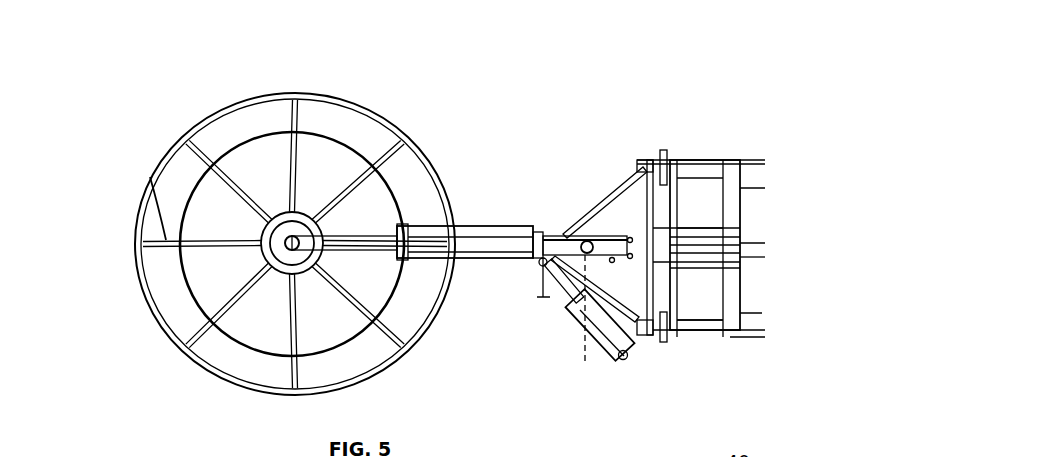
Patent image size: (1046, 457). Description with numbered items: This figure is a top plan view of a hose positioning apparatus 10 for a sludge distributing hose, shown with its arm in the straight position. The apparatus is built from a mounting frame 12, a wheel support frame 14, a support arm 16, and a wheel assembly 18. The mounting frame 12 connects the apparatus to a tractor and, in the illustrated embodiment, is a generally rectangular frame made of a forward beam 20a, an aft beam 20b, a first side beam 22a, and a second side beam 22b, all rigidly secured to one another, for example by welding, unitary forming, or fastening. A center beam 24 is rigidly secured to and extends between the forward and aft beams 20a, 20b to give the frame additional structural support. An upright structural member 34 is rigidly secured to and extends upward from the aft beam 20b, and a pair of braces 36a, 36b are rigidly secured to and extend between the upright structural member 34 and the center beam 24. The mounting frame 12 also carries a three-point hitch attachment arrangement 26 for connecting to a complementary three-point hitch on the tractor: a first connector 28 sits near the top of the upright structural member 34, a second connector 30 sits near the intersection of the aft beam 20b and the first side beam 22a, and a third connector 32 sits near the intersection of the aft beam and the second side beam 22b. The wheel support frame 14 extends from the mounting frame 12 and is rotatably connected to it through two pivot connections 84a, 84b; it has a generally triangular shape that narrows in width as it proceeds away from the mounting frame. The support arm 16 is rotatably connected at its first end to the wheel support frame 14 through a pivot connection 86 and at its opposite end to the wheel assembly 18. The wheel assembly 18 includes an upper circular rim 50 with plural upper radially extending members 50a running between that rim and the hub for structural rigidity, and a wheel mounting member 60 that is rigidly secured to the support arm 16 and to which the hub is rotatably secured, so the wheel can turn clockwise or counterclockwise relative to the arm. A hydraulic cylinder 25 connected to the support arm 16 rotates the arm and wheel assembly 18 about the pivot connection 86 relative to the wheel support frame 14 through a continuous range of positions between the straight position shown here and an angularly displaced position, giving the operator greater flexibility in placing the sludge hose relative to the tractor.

The hose positioning apparatus 10 is at (502, 100).
The mounting frame 12 is at (709, 140).
The wheel support frame 14 is at (596, 232).
The support arm 16 is at (479, 240).
The wheel assembly 18 is at (271, 86).
The forward beam 20a is at (677, 337).
The aft beam 20b is at (742, 283).
The first side beam 22a is at (712, 342).
The second side beam 22b is at (716, 170).
The center beam 24 is at (742, 236).
The hydraulic cylinder 25 is at (588, 325).
The three-point hitch attachment arrangement 26 is at (804, 187).
The first connector 28 is at (760, 246).
The second connector 30 is at (762, 338).
The third connector 32 is at (764, 160).
The upright structural member 34 is at (744, 246).
The brace 36a is at (694, 265).
The brace 36b is at (700, 232).
The upper circular rim 50 is at (337, 98).
The upper radially extending members 50a is at (200, 183).
The wheel mounting member 60 is at (362, 245).
The pivot connection 84a is at (660, 342).
The pivot connection 84b is at (663, 150).
The pivot connection 86 is at (586, 240).